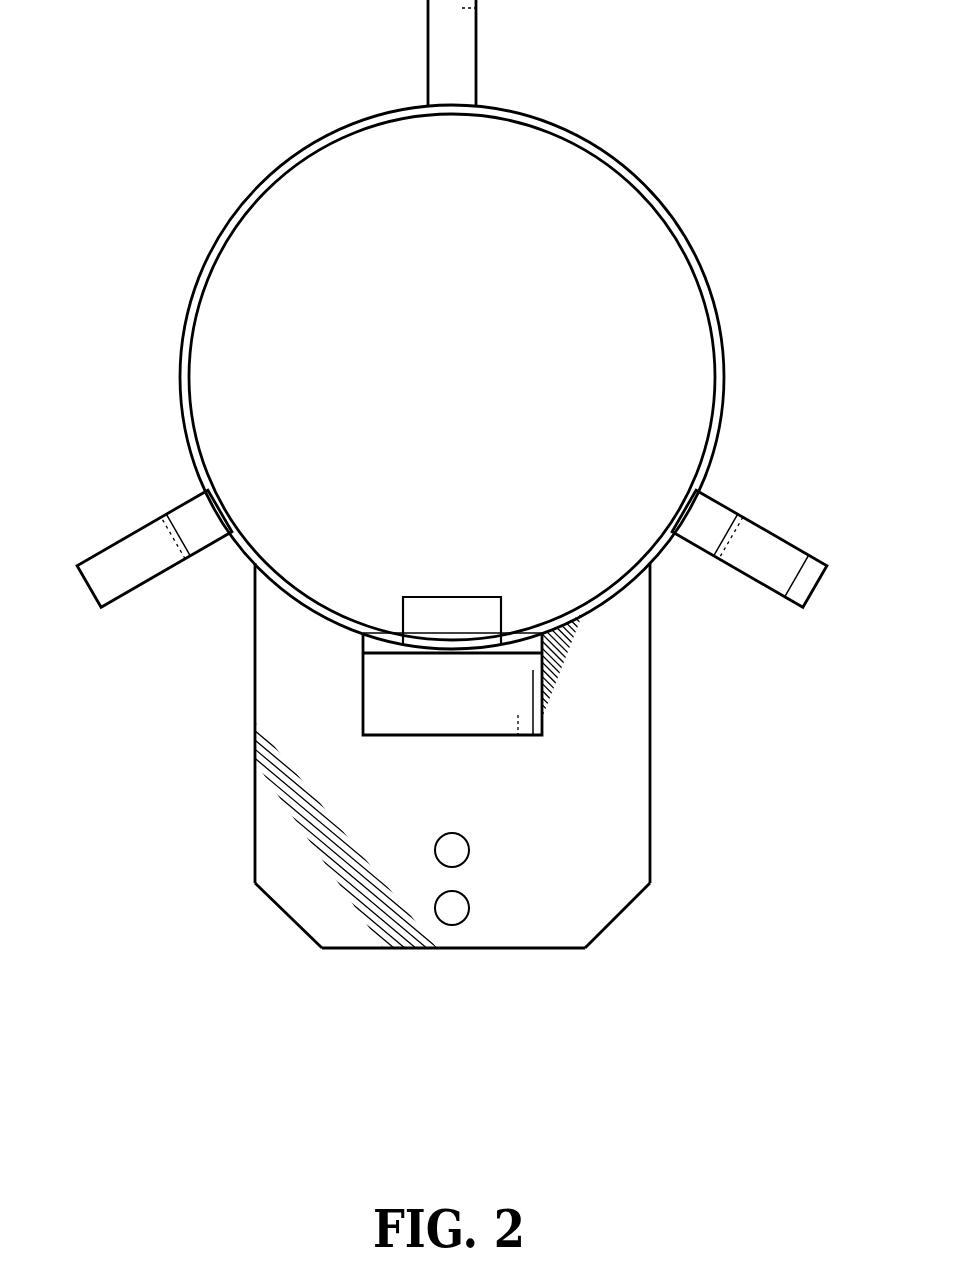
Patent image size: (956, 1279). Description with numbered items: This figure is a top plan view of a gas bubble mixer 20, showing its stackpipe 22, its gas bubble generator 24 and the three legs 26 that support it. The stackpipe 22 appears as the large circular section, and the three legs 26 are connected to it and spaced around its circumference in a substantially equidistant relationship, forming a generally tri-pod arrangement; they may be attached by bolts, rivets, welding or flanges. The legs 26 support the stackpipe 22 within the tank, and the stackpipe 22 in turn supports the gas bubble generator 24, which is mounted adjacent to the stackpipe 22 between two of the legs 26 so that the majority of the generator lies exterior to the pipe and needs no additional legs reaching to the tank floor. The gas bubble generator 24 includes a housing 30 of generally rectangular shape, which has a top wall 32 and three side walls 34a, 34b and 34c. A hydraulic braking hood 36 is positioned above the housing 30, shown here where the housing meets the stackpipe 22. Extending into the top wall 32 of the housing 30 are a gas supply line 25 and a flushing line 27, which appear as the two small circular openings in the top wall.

The gas bubble mixer 20 is at (197, 90).
The stackpipe 22 is at (690, 243).
The gas bubble generator 24 is at (682, 730).
The gas supply line 25 is at (469, 909).
The legs 26 is at (478, 48).
The flushing line 27 is at (469, 842).
The housing 30 is at (213, 745).
The top wall 32 is at (297, 892).
The side wall 34a is at (453, 950).
The side wall 34b is at (652, 812).
The side wall 34c is at (253, 822).
The hydraulic braking hood 36 is at (361, 672).